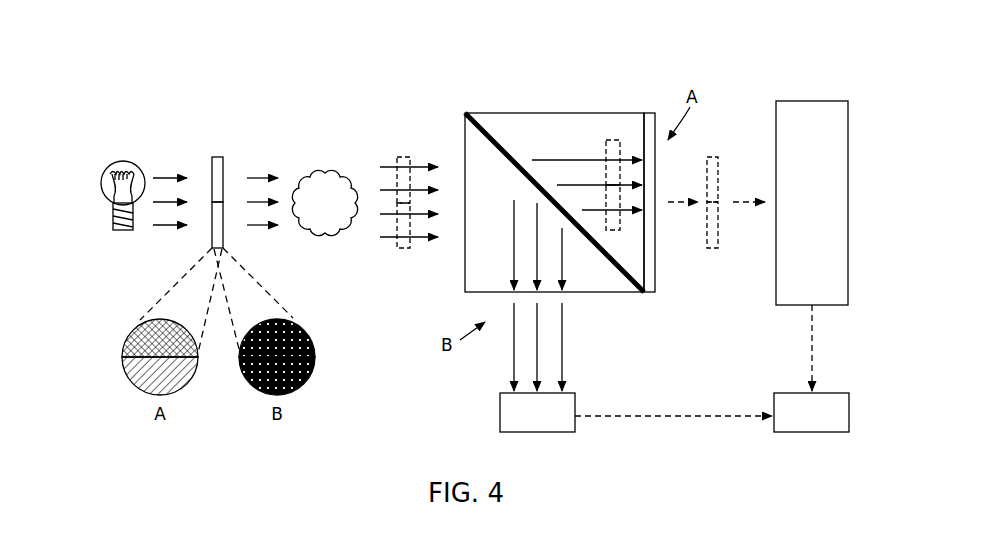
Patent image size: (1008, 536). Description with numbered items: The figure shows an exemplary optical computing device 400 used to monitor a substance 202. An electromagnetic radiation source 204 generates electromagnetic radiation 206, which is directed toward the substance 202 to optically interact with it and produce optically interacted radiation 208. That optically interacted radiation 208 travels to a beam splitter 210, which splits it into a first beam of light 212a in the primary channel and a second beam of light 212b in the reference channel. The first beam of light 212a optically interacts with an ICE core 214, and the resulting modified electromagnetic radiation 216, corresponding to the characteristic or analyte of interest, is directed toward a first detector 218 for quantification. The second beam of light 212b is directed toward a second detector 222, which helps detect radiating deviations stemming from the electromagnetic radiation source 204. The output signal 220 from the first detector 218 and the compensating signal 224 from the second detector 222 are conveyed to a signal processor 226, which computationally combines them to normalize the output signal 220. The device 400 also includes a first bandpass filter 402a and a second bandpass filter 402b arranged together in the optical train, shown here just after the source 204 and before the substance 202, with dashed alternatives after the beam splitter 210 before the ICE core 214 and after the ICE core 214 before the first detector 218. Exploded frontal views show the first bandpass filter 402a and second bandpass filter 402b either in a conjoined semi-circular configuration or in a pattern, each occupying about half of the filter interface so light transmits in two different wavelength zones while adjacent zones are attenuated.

The optical computing device 400 is at (360, 52).
The electromagnetic radiation source 204 is at (122, 161).
The electromagnetic radiation 206 is at (156, 178).
The first bandpass filter 402a is at (218, 157).
The second bandpass filter 402b is at (212, 240).
The substance 202 is at (324, 202).
The optically interacted radiation 208 is at (385, 160).
The beam splitter 210 is at (490, 127).
The first beam of light 212a is at (563, 160).
The second beam of light 212b is at (512, 253).
The ICE core 214 is at (652, 120).
The modified electromagnetic radiation 216 is at (737, 200).
The first detector 218 is at (812, 203).
The output signal 220 is at (812, 352).
The second detector 222 is at (537, 412).
The compensating signal 224 is at (662, 416).
The signal processor 226 is at (811, 412).